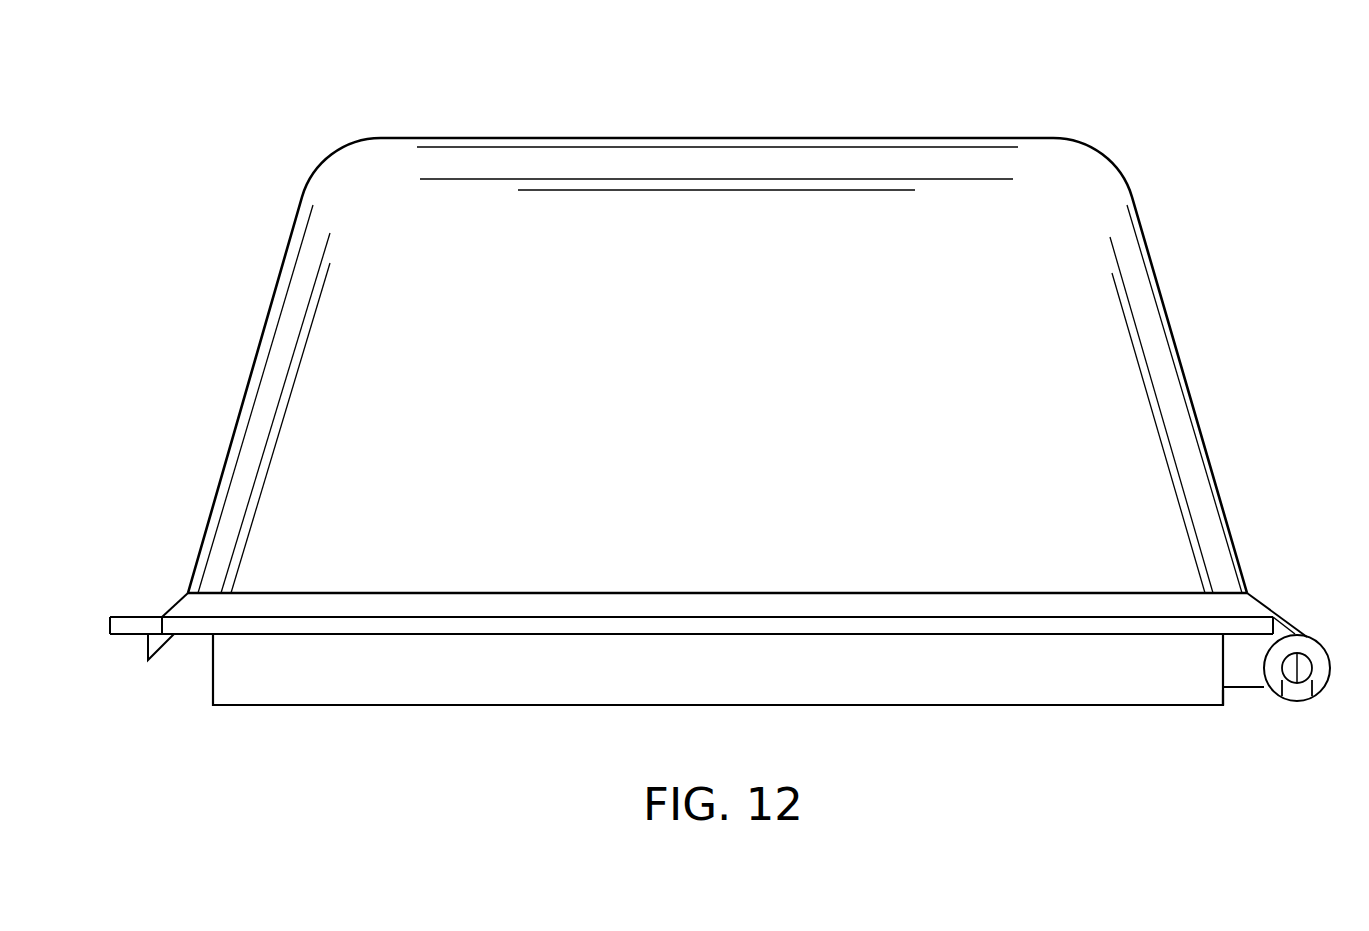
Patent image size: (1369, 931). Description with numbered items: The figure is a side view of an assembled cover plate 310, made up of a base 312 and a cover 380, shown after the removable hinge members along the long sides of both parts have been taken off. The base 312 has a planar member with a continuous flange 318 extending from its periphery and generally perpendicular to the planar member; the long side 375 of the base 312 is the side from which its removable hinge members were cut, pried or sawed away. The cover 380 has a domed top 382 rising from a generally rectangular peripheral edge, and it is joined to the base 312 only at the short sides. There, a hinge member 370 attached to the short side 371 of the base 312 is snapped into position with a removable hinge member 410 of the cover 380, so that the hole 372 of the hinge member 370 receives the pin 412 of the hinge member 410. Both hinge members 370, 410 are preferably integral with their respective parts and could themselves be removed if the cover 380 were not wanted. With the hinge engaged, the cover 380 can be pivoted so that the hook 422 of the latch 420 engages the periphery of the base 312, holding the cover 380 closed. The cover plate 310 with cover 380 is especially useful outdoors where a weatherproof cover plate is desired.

The cover plate 310 is at (223, 165).
The base 312 is at (958, 705).
The continuous flange 318 is at (1047, 683).
The hinge member 370 is at (1250, 677).
The short side 371 is at (1228, 700).
The hole 372 is at (1303, 673).
The long side 375 is at (1176, 682).
The cover 380 is at (1150, 245).
The domed top 382 is at (1085, 177).
The removable hinge member 410 is at (1285, 630).
The pin 412 is at (1303, 665).
The latch 420 is at (158, 620).
The hook 422 is at (160, 645).